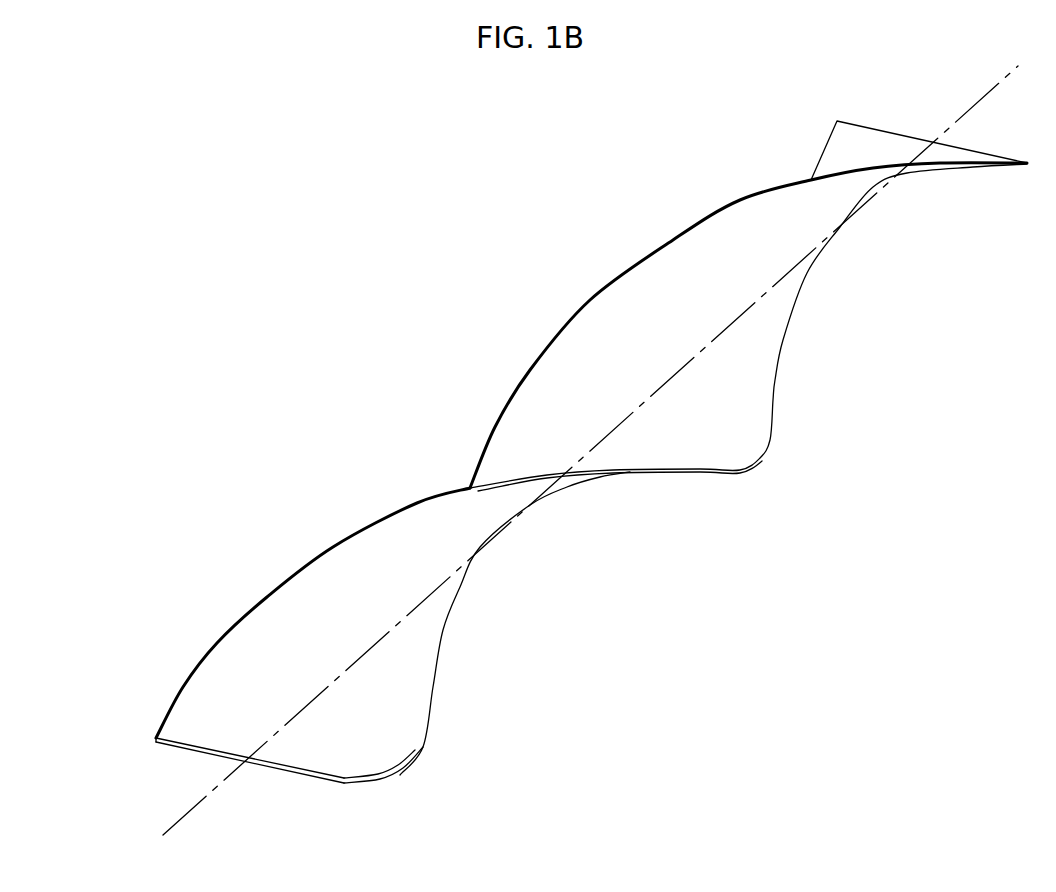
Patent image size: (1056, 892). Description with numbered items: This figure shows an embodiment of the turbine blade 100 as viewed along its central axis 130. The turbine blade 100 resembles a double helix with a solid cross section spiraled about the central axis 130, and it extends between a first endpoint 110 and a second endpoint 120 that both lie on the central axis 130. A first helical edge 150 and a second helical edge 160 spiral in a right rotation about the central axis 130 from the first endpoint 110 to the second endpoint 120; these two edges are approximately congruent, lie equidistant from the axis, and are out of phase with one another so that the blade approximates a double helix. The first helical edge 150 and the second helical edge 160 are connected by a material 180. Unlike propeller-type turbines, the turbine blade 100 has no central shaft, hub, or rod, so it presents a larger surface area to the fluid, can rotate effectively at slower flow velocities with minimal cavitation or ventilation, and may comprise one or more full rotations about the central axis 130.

The turbine blade 100 is at (405, 165).
The first endpoint 110 is at (253, 758).
The second endpoint 120 is at (932, 142).
The central axis 130 is at (720, 333).
The first helical edge 150 is at (495, 427).
The second helical edge 160 is at (673, 475).
The material 180 is at (588, 380).